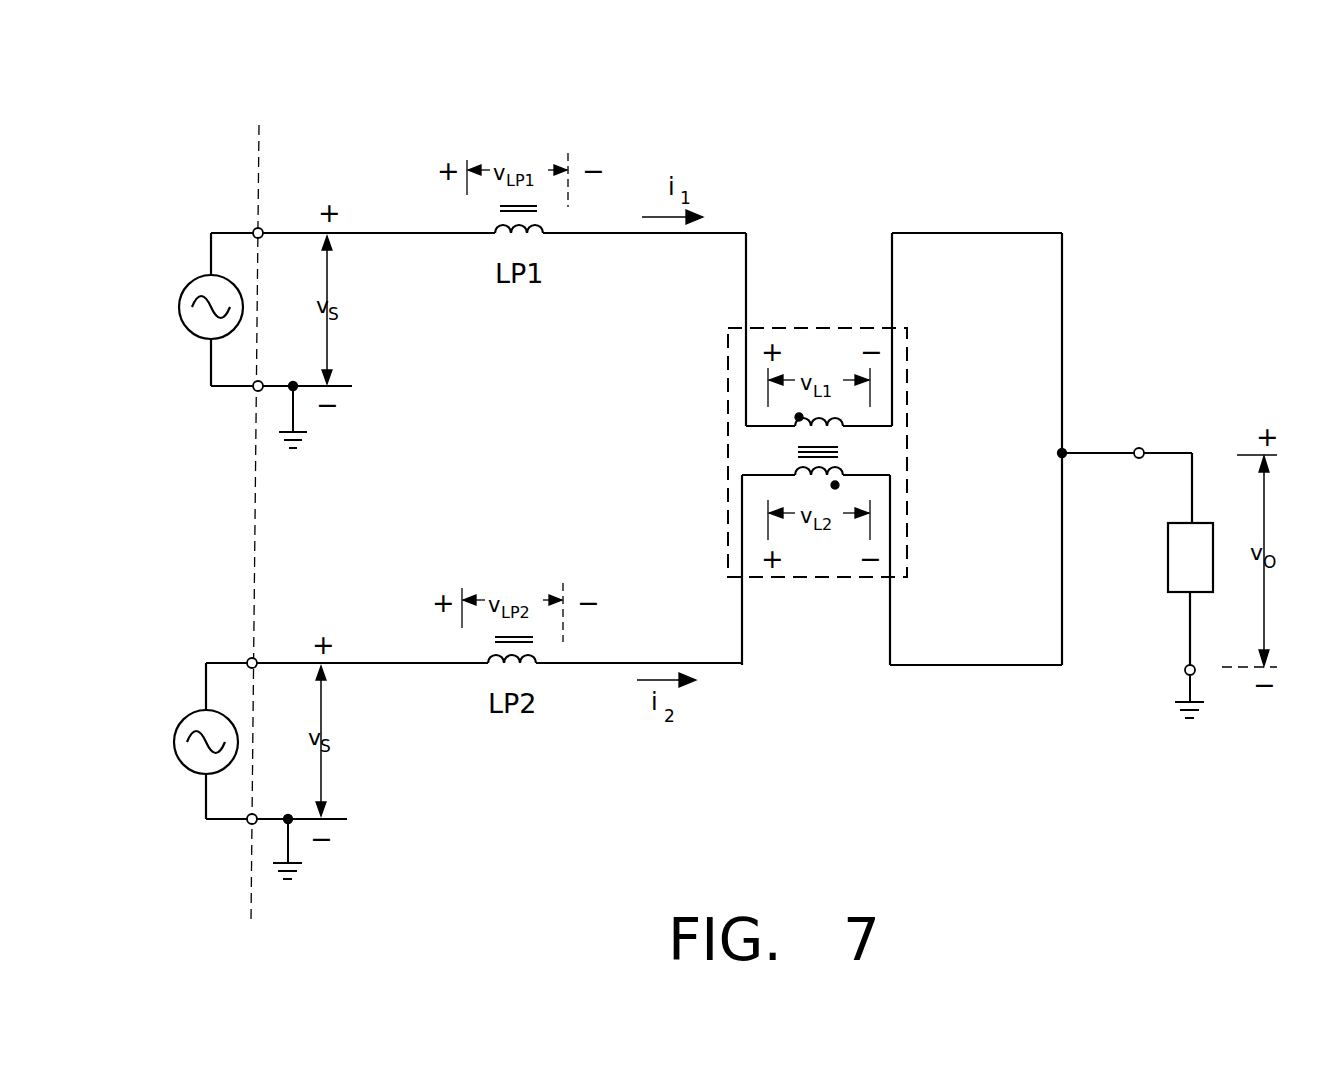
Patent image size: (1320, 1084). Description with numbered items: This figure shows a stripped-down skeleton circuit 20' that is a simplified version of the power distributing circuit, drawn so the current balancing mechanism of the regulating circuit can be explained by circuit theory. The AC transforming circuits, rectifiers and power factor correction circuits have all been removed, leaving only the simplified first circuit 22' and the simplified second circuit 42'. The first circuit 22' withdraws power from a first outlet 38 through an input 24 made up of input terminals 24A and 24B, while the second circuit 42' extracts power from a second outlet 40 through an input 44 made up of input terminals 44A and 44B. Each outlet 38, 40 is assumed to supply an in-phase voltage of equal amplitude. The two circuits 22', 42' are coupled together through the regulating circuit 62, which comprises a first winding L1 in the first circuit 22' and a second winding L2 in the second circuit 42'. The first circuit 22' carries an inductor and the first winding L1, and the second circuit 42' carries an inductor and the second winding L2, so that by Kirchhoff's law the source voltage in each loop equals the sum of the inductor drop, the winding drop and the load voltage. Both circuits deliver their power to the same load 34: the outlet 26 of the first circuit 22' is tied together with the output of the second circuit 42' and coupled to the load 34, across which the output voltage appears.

The skeleton circuit 20' is at (740, 499).
The first circuit (simplified) 22' is at (980, 197).
The input 24 is at (215, 208).
The input terminal 24A is at (257, 226).
The input terminal 24B is at (253, 391).
The outlet 26 is at (1140, 448).
The load 34 is at (1168, 545).
The first outlet 38 is at (180, 297).
The second outlet 40 is at (175, 730).
The second circuit (simplified) 42' is at (987, 715).
The input 44 is at (209, 640).
The input terminal 44A is at (250, 659).
The input terminal 44B is at (248, 825).
The regulating circuit 62 is at (907, 512).
The first winding L1 is at (843, 432).
The second winding L2 is at (797, 467).